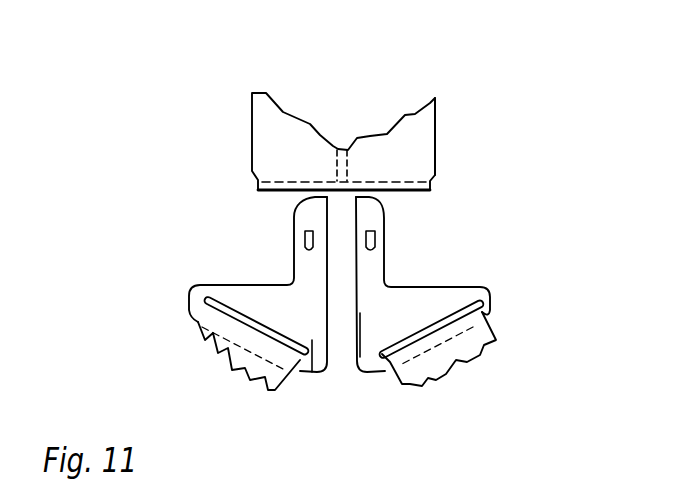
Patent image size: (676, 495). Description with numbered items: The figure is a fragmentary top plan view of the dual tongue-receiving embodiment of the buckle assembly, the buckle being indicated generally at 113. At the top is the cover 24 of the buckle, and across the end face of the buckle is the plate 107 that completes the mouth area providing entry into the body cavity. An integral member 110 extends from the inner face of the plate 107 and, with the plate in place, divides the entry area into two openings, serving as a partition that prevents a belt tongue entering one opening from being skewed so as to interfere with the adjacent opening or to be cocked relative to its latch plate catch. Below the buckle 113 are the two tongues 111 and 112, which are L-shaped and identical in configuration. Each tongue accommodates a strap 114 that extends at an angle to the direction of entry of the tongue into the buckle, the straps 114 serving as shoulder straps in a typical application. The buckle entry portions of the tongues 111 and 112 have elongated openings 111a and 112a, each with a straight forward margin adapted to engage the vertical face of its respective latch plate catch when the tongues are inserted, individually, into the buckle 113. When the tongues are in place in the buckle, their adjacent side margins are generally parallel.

The cover 24 is at (277, 143).
The plate 107 is at (302, 189).
The integral member 110 is at (348, 165).
The buckle 113 is at (454, 159).
The tongue 111 is at (312, 372).
The elongated opening 111a is at (305, 237).
The tongue 112 is at (368, 360).
The elongated opening 112a is at (375, 237).
The straps 114 is at (268, 390).